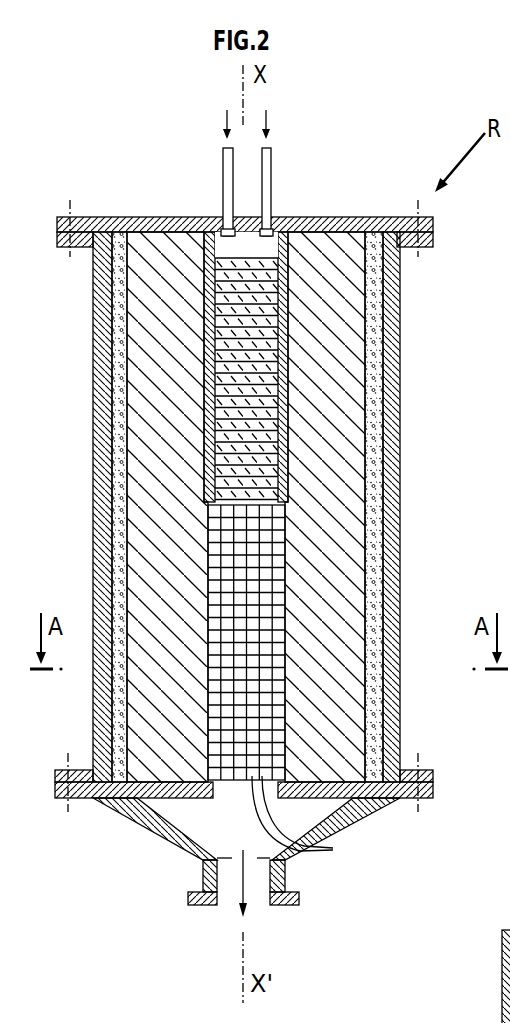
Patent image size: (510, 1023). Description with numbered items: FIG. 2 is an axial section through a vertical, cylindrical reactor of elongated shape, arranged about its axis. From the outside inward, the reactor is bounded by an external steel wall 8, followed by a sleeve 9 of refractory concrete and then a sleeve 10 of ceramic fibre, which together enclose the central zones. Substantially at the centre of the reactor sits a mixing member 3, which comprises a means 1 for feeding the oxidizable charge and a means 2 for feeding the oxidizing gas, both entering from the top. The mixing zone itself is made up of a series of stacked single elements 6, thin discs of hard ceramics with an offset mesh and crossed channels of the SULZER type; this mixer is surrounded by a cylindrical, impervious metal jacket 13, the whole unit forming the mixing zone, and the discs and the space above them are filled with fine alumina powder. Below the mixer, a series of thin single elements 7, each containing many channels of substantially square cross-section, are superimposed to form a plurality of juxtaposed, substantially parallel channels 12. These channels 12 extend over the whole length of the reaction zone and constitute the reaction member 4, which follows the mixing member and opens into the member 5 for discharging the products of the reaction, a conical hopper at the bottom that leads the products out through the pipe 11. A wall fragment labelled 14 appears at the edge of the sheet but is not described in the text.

The means for feeding the oxidizable charge 1 is at (222, 172).
The means for feeding the oxidizing gas 2 is at (271, 172).
The mixing member 3 is at (285, 297).
The reaction member 4 is at (287, 545).
The member for discharging the products of the reaction 5 is at (180, 816).
The stacked single elements 6 is at (285, 343).
The thin single elements 7 is at (278, 577).
The external steel wall 8 is at (100, 323).
The sleeve of refractory concrete 9 is at (113, 382).
The sleeve of ceramic fibre 10 is at (143, 438).
The pipe 11 is at (243, 887).
The channels 12 is at (333, 850).
The cylindrical impervious metal jacket 13 is at (285, 397).
The wall of adjacent figure 14 is at (503, 1003).